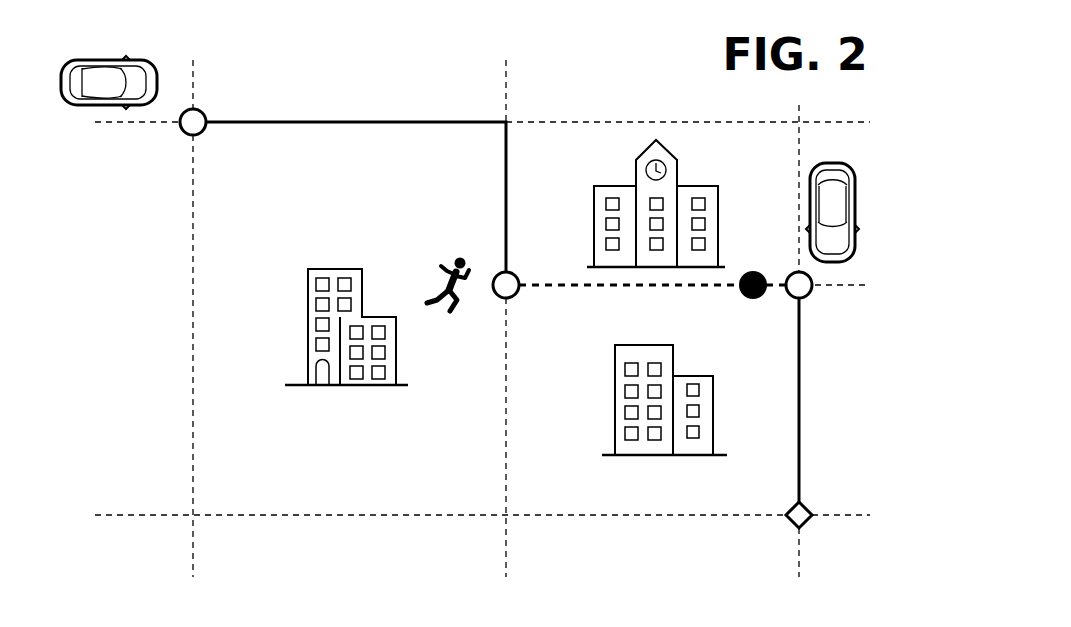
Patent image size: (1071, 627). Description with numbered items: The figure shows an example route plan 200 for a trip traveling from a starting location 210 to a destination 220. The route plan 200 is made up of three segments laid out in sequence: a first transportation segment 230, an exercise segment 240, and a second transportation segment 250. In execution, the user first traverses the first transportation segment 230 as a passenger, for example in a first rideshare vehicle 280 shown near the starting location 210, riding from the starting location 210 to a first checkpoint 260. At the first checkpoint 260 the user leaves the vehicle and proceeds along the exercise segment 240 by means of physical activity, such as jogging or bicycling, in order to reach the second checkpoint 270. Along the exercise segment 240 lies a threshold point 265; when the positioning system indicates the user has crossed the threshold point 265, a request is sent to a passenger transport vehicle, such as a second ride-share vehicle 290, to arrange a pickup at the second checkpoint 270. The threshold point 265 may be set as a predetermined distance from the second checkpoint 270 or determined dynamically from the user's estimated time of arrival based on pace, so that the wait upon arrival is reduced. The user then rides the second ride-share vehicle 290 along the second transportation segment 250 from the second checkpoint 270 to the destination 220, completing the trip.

The route plan 200 is at (517, 617).
The starting location 210 is at (183, 134).
The destination 220 is at (805, 523).
The first transportation segment 230 is at (363, 121).
The exercise segment 240 is at (557, 288).
The second transportation segment 250 is at (800, 377).
The first checkpoint 260 is at (499, 297).
The threshold point 265 is at (757, 272).
The second checkpoint 270 is at (810, 293).
The first rideshare vehicle 280 is at (100, 58).
The second ride-share vehicle 290 is at (855, 205).